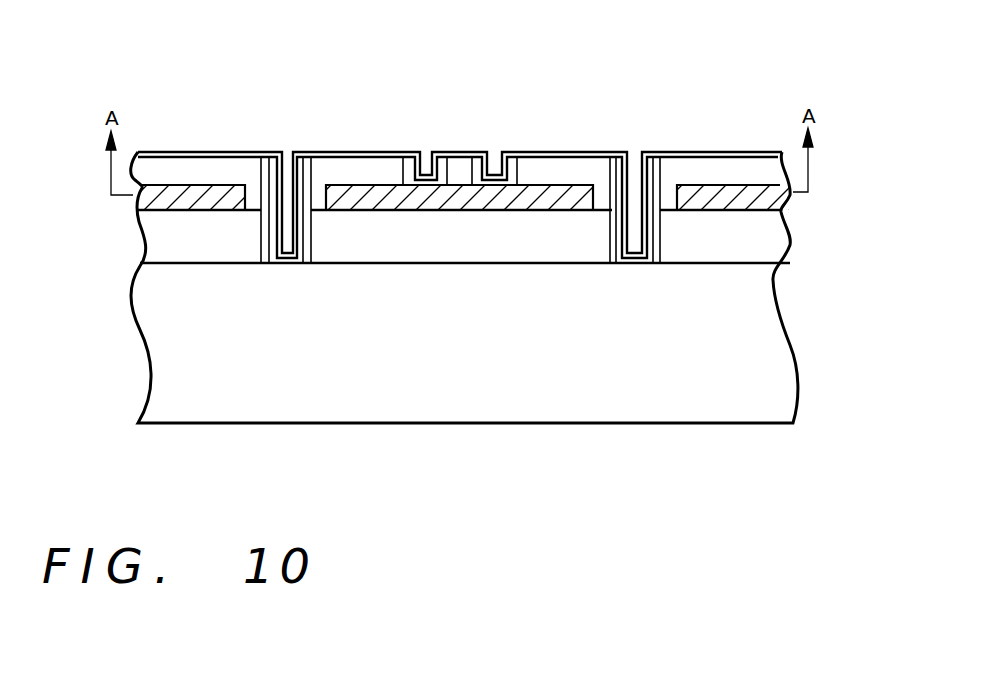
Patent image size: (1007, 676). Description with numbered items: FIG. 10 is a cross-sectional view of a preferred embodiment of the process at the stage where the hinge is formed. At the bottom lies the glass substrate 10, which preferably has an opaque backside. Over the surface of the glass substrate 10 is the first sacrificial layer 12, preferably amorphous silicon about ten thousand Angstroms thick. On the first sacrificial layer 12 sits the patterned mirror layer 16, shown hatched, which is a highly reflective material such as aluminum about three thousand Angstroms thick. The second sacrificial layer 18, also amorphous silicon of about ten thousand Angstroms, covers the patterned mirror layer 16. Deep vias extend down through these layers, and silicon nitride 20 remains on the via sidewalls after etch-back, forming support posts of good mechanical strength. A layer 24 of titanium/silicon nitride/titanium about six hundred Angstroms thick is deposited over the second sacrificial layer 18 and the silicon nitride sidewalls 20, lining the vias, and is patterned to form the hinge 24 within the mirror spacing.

The glass substrate 10 is at (750, 372).
The first sacrificial layer 12 is at (750, 247).
The mirror layer 16 is at (770, 200).
The second sacrificial layer 18 is at (767, 167).
The silicon nitride sidewalls 20 is at (265, 263).
The hinge layer 24 is at (690, 150).